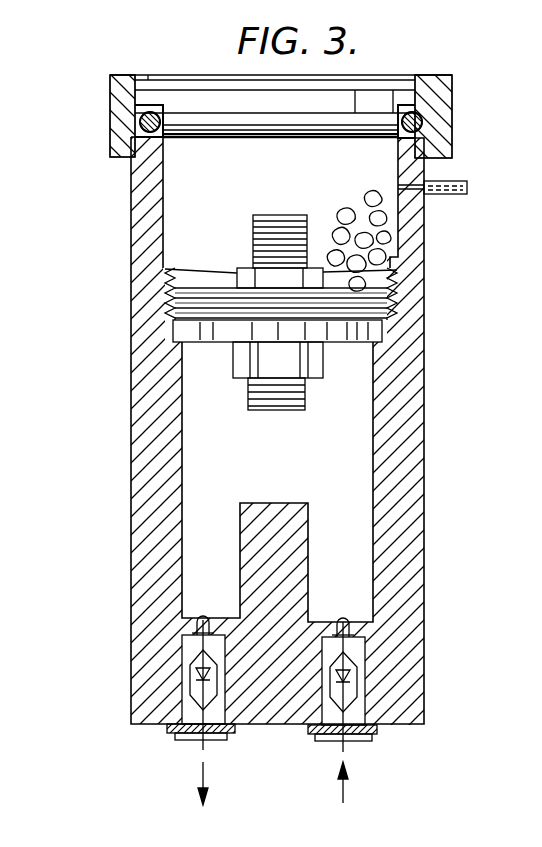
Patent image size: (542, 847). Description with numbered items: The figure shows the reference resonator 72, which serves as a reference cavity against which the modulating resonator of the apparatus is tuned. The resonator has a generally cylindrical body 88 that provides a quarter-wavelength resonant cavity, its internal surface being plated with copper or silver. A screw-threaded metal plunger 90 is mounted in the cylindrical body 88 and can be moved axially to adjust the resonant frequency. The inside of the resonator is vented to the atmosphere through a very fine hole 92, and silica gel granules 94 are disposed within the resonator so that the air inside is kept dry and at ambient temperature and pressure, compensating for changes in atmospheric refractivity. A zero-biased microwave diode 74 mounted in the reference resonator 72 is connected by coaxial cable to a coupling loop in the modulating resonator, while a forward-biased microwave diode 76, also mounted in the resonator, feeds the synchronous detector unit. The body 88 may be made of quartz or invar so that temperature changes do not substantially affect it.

The reference resonator 72 is at (98, 617).
The zero-biased microwave diode 74 is at (352, 686).
The forward-biased microwave diode 76 is at (195, 690).
The cylindrical body 88 is at (138, 517).
The screw-threaded metal plunger 90 is at (305, 397).
The very fine hole 92 is at (467, 192).
The silica gel granules 94 is at (370, 232).